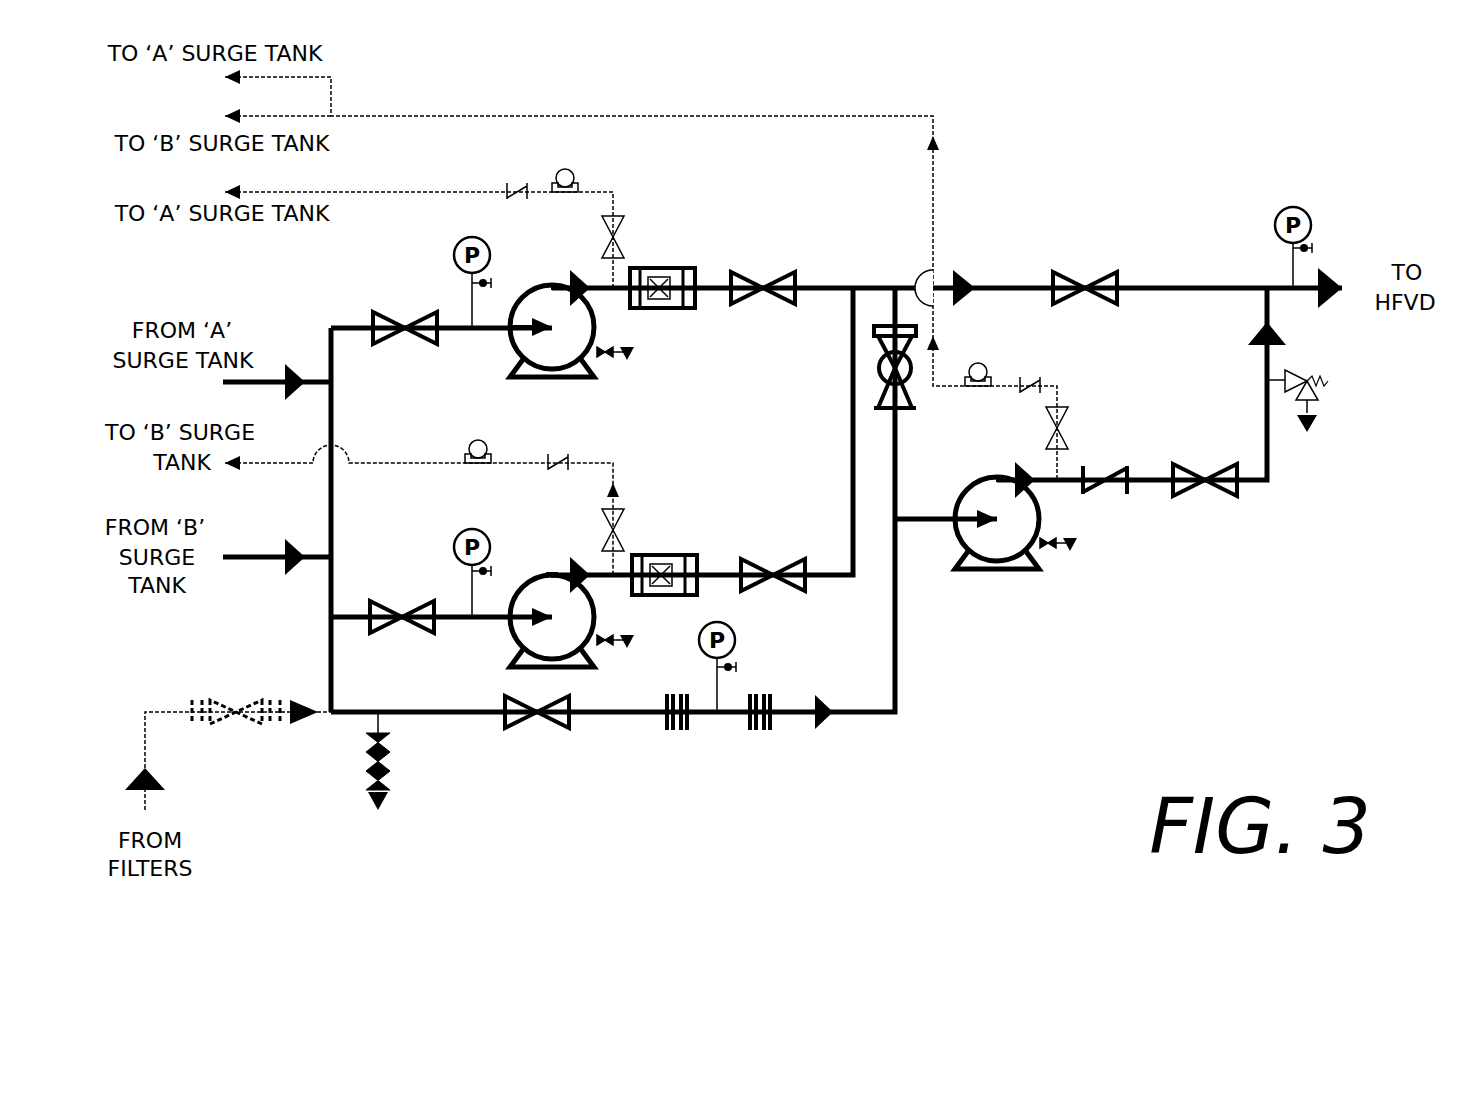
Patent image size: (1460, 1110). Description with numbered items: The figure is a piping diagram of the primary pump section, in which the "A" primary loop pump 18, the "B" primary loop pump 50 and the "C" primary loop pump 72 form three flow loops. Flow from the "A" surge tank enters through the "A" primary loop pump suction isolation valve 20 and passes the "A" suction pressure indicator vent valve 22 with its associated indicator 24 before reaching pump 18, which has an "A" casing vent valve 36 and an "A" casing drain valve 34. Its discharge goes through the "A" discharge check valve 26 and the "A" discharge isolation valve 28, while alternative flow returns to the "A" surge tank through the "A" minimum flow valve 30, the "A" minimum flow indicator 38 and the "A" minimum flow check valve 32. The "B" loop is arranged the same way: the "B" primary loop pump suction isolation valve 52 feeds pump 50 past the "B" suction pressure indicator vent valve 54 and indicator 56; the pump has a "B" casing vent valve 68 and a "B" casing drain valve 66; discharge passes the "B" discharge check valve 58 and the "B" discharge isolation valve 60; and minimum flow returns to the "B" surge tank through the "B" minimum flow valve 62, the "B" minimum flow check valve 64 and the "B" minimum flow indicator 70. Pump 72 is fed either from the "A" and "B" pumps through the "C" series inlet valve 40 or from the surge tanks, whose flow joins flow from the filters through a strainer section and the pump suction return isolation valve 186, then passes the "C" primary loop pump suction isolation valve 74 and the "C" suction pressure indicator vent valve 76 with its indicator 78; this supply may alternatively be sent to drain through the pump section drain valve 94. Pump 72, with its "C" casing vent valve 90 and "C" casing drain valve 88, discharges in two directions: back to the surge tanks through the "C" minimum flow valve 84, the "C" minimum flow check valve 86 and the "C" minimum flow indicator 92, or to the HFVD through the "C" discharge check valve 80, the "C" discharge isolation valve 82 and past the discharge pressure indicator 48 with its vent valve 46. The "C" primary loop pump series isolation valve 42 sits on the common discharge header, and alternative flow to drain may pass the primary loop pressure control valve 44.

The "A" primary loop pump 18 is at (583, 382).
The "A" primary loop pump suction isolation valve 20 is at (403, 350).
The "A" suction pressure indicator vent valve 22 is at (455, 283).
The "A" suction pressure indicator 24 is at (438, 244).
The "A" discharge check valve 26 is at (670, 318).
The "A" discharge isolation valve 28 is at (765, 310).
The "A" minimum flow valve 30 is at (628, 237).
The "A" minimum flow check valve 32 is at (505, 186).
The "A" casing drain valve 34 is at (638, 368).
The "A" casing vent valve 36 is at (552, 275).
The "A" minimum flow indicator 38 is at (588, 163).
The "C" series inlet valve 40 is at (870, 377).
The "C" primary loop pump series isolation valve 42 is at (1082, 265).
The primary loop pressure control valve 44 is at (1328, 410).
The vent valve 46 is at (1320, 248).
The discharge pressure indicator 48 is at (1318, 215).
The "B" primary loop pump 50 is at (585, 676).
The "B" primary loop pump suction isolation valve 52 is at (402, 640).
The "B" suction pressure indicator vent valve 54 is at (455, 571).
The "B" suction pressure indicator 56 is at (455, 533).
The "B" discharge check valve 58 is at (660, 603).
The "B" discharge isolation valve 60 is at (773, 555).
The "B" minimum flow valve 62 is at (627, 530).
The "B" minimum flow check valve 64 is at (555, 455).
The "B" casing drain valve 66 is at (634, 649).
The "B" casing vent valve 68 is at (552, 563).
The "B" minimum flow indicator 70 is at (474, 425).
The "C" primary loop pump 72 is at (997, 585).
The "C" primary loop pump suction isolation valve 74 is at (537, 735).
The "C" suction pressure indicator vent valve 76 is at (750, 667).
The "C" suction pressure indicator 78 is at (748, 640).
The "C" discharge check valve 80 is at (1118, 500).
The "C" discharge isolation valve 82 is at (1208, 497).
The "C" minimum flow valve 84 is at (1072, 428).
The "C" minimum flow check valve 86 is at (1045, 378).
The "C" casing drain valve 88 is at (1082, 562).
The "C" casing vent valve 90 is at (996, 468).
The "C" minimum flow indicator 92 is at (993, 355).
The pump section drain valve 94 is at (400, 763).
The pump suction return isolation valve 186 is at (240, 745).